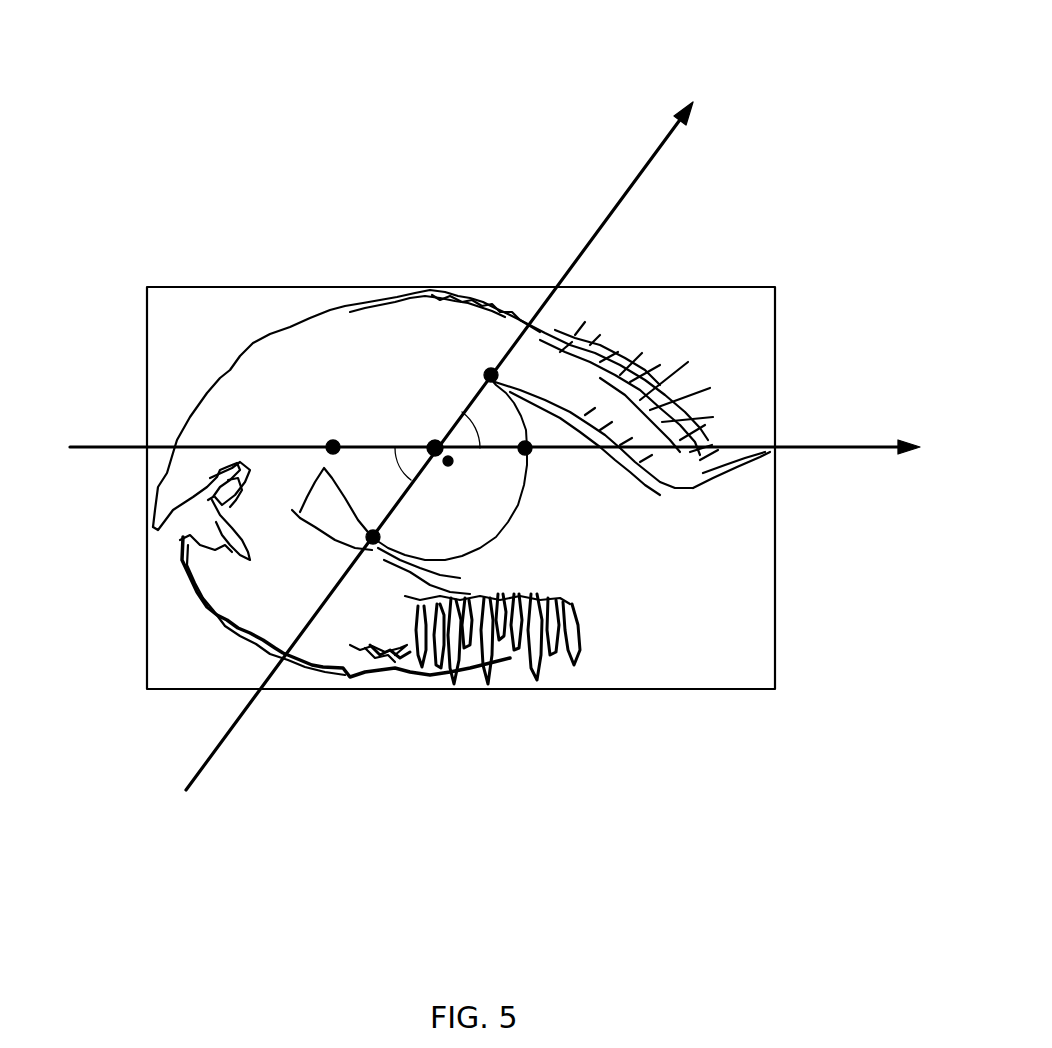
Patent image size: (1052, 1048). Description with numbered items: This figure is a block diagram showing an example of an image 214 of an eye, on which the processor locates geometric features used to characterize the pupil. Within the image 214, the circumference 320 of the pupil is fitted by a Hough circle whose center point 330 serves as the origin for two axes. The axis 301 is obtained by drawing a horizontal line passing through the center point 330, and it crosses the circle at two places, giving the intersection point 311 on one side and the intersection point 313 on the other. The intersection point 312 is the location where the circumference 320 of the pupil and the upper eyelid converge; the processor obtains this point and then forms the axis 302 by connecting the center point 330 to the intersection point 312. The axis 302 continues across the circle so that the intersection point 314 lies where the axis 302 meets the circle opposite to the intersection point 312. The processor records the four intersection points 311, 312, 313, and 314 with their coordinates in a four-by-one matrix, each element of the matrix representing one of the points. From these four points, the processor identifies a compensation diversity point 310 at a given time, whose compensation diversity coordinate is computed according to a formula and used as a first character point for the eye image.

The image 214 is at (706, 288).
The axis 301 is at (116, 446).
The axis 302 is at (204, 762).
The compensation diversity point 310 is at (447, 478).
The intersection point 311 is at (332, 432).
The intersection point 312 is at (492, 364).
The intersection point 313 is at (541, 470).
The intersection point 314 is at (370, 555).
The circumference of the pupil 320 is at (478, 553).
The center point 330 is at (431, 433).